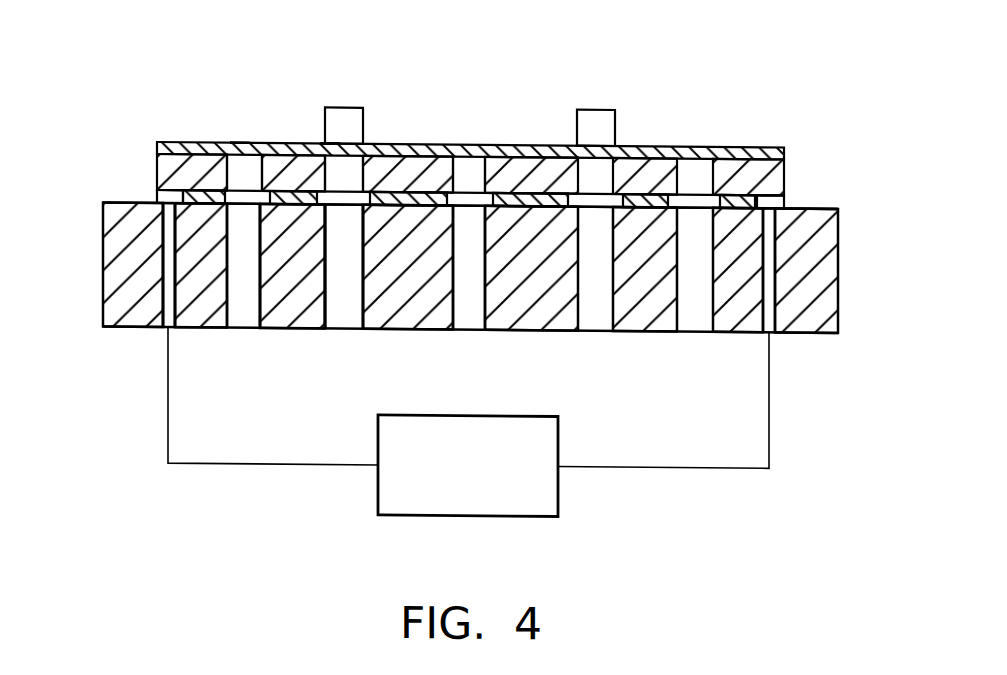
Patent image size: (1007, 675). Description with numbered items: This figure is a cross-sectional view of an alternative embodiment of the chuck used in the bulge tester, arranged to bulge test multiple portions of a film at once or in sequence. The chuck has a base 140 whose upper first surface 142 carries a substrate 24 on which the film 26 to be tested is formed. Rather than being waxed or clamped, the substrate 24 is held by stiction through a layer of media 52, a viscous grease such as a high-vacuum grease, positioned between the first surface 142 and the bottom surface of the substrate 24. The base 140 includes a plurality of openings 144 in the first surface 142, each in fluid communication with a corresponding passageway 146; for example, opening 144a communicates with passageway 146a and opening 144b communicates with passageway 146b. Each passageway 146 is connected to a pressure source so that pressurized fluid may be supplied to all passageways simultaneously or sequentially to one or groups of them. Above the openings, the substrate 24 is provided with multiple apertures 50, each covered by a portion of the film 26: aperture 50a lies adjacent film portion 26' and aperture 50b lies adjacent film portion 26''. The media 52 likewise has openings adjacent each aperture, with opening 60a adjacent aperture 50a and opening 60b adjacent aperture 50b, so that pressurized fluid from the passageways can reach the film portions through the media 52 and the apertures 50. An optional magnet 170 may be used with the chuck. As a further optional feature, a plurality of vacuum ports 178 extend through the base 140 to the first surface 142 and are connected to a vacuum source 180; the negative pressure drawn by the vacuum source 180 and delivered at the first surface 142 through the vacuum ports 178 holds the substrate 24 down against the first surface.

The base 140 is at (121, 104).
The first surface 142 is at (818, 199).
The openings 144 is at (470, 199).
The opening 144a is at (225, 150).
The opening 144b is at (340, 200).
The passageway 146 is at (247, 234).
The passageway 146a is at (236, 273).
The passageway 146b is at (334, 275).
The magnet 170 is at (333, 111).
The vacuum ports 178 is at (168, 268).
The vacuum source 180 is at (390, 513).
The substrate 24 is at (776, 172).
The film 26 is at (470, 128).
The film portion 26' is at (227, 124).
The film portion 26'' is at (304, 119).
The apertures 50 is at (468, 174).
The aperture 50a is at (225, 160).
The aperture 50b is at (366, 165).
The media 52 is at (183, 194).
The opening 60a is at (232, 189).
The opening 60b is at (368, 201).